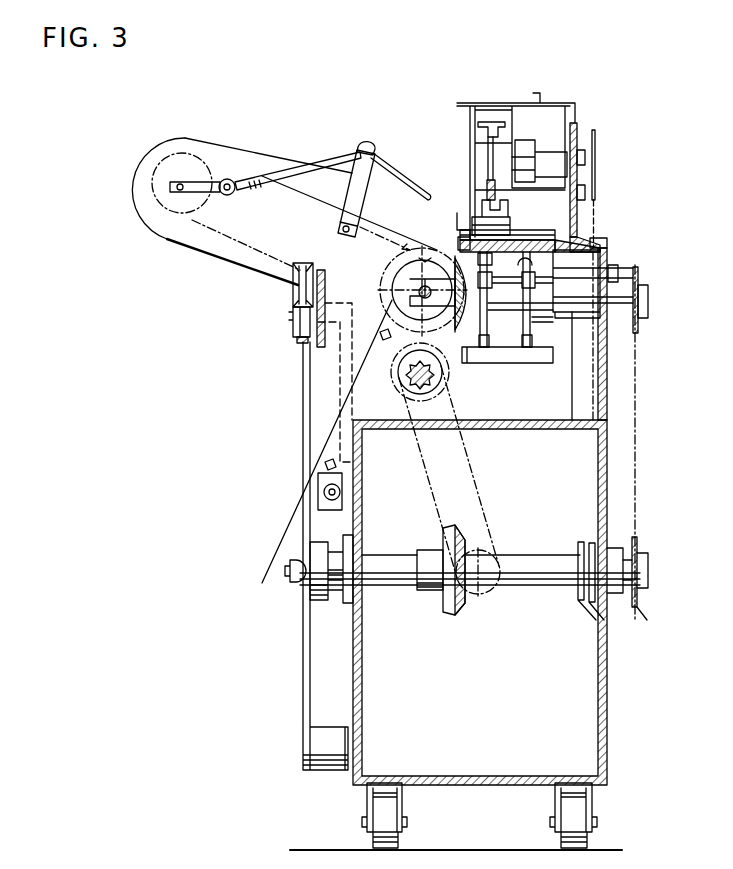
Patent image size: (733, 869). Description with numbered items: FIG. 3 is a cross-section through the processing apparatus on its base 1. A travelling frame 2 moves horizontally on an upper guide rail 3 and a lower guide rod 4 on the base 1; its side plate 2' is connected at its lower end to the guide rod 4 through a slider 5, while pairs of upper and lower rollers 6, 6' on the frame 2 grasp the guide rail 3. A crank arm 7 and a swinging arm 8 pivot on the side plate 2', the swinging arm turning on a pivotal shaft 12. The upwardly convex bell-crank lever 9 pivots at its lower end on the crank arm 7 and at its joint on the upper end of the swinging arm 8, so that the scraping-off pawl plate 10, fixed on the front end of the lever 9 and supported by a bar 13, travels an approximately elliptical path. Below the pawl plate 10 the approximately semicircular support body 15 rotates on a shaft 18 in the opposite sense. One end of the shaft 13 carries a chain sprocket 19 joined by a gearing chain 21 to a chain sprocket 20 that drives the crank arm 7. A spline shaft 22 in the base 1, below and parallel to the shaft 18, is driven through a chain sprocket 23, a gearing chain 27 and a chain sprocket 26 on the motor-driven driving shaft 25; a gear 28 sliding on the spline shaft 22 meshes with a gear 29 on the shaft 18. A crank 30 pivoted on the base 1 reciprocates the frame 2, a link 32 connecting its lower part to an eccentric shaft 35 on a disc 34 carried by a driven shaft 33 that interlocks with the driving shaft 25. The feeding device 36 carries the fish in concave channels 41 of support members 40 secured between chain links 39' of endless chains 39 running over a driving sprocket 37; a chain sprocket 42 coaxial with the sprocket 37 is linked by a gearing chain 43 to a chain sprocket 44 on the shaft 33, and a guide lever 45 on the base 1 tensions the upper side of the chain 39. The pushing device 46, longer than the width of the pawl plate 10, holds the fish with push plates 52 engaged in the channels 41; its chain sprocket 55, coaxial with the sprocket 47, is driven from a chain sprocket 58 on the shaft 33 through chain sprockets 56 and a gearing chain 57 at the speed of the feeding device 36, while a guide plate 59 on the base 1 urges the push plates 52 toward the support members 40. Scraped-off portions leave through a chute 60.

The base 1 is at (606, 735).
The travelling frame 2 is at (268, 366).
The side plate 2' is at (284, 155).
The guide rail 3 is at (293, 318).
The guide rod 4 is at (300, 505).
The slider 5 is at (342, 500).
The roller 6 is at (249, 285).
The roller 6' is at (245, 349).
The crank arm 7 is at (198, 185).
The swinging arm 8 is at (360, 201).
The bell-crank lever 9 is at (292, 168).
The scraping-off pawl plate 10 is at (458, 213).
The pivotal shaft 12 is at (340, 229).
The bar 13 is at (362, 146).
The support body 15 is at (466, 322).
The shaft 18 is at (418, 290).
The chain sprocket 19 is at (426, 262).
The chain sprocket 20 is at (180, 172).
The gearing chain 21 is at (207, 240).
The spline shaft 22 is at (410, 398).
The chain sprocket 23 is at (470, 416).
The driving shaft 25 is at (500, 605).
The chain sprocket 26 is at (478, 598).
The gearing chain 27 is at (492, 517).
The gear 28 is at (424, 382).
The gear 29 is at (380, 333).
The crank 30 is at (303, 650).
The link 32 is at (296, 580).
The driven shaft 33 is at (391, 598).
The disc 34 is at (310, 598).
The eccentric shaft 35 is at (288, 571).
The feeding device 36 is at (545, 378).
The driving sprocket 37 is at (560, 318).
The endless chain 39 is at (637, 233).
The chain link 39' is at (662, 295).
The support member 40 is at (548, 246).
The concave channel 41 is at (552, 258).
The chain sprocket 42 is at (642, 330).
The gearing chain 43 is at (640, 462).
The chain sprocket 44 is at (637, 613).
The guide lever 45 is at (576, 238).
The pushing device 46 is at (525, 120).
The sprocket 47 is at (513, 158).
The push plate 52 is at (490, 228).
The chain sprocket 55 is at (594, 150).
The chain sprockets 56 is at (590, 610).
The gearing chain 57 is at (600, 505).
The chain sprocket 58 is at (597, 612).
The guide plate 59 is at (490, 175).
The chute 60 is at (316, 508).